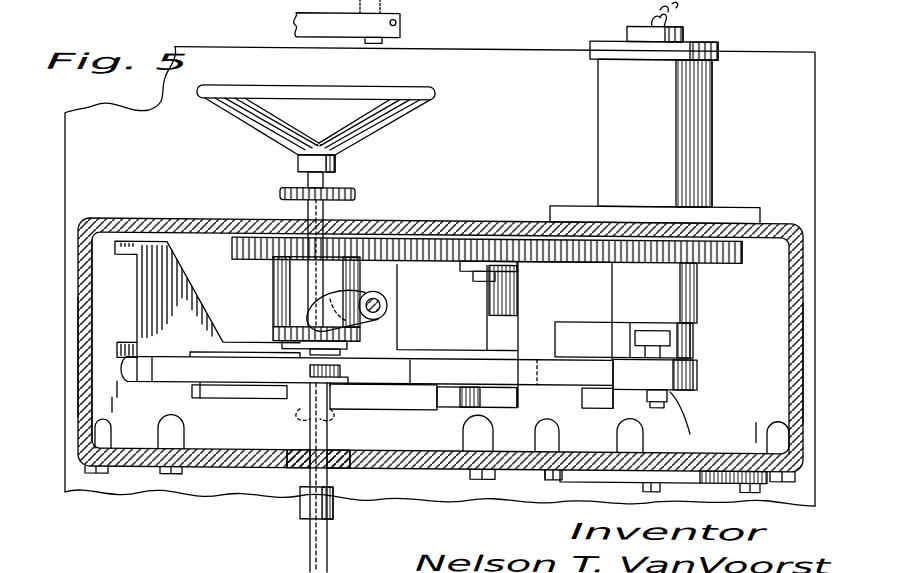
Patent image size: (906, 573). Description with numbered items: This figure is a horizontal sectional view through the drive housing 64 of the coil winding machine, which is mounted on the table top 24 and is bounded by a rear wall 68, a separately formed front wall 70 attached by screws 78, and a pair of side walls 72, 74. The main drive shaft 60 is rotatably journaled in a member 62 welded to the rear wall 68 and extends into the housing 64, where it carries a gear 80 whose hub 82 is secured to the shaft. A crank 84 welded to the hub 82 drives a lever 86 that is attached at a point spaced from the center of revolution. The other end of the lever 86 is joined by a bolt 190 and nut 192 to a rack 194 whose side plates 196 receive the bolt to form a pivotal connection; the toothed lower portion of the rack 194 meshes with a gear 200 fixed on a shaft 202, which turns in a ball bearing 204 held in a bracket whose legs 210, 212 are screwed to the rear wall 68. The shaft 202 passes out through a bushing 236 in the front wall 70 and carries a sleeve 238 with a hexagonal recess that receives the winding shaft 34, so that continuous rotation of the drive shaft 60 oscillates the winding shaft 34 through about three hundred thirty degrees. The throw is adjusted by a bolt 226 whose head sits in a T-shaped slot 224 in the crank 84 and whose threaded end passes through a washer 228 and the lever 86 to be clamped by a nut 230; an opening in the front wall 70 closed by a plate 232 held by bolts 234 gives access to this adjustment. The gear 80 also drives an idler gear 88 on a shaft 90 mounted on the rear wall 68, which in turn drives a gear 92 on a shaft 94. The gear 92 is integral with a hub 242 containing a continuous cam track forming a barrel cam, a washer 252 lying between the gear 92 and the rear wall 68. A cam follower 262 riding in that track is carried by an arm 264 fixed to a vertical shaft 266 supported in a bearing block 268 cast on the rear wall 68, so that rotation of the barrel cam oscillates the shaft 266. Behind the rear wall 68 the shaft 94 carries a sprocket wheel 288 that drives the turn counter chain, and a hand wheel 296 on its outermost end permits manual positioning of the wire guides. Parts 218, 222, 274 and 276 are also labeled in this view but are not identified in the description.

The table top 24 is at (517, 119).
The winding shaft 34 is at (328, 543).
The main drive shaft 60 is at (647, 12).
The member 62 is at (712, 94).
The housing 64 is at (122, 215).
The rear wall 68 is at (172, 221).
The front wall 70 is at (177, 372).
The side wall 72 is at (78, 352).
The side wall 74 is at (790, 345).
The screws 78 is at (95, 476).
The gear 80 is at (742, 250).
The hub 82 is at (697, 284).
The crank 84 is at (752, 358).
The lever 86 is at (585, 384).
The idler gear 88 is at (530, 262).
The shaft 90 is at (482, 239).
The gear 92 is at (365, 201).
The shaft 94 is at (297, 186).
The bolt 190 is at (335, 415).
The nut 192 is at (345, 395).
The rack 194 is at (222, 400).
The side plates 196 is at (170, 359).
The gear 200 is at (292, 400).
The shaft 202 is at (340, 466).
The ball bearing 204 is at (490, 408).
The leg 210 is at (120, 400).
The leg 212 is at (584, 412).
The link 218 is at (137, 395).
The guide 222 is at (610, 402).
The T-shaped slot 224 is at (624, 322).
The bolt 226 is at (662, 331).
The washer 228 is at (678, 400).
The nut 230 is at (652, 406).
The plate 232 is at (618, 470).
The bolts 234 is at (547, 476).
The bushing 236 is at (300, 466).
The sleeve 238 is at (300, 510).
The hub 242 is at (340, 261).
The washer 252 is at (304, 224).
The cam follower 262 is at (282, 334).
The arm 264 is at (395, 332).
The shaft 266 is at (405, 281).
The bearing block 268 is at (390, 308).
The clutch ring 274 is at (290, 322).
The sleeve 276 is at (300, 287).
The sprocket wheel 288 is at (347, 189).
The hand wheel 296 is at (340, 92).